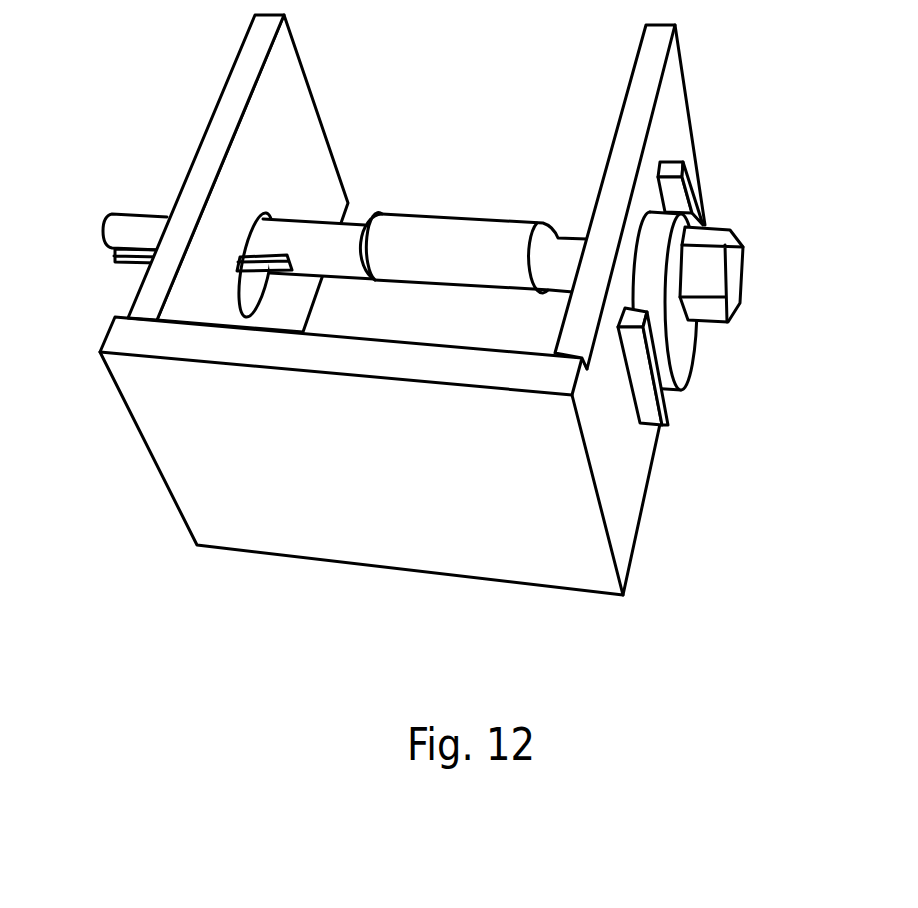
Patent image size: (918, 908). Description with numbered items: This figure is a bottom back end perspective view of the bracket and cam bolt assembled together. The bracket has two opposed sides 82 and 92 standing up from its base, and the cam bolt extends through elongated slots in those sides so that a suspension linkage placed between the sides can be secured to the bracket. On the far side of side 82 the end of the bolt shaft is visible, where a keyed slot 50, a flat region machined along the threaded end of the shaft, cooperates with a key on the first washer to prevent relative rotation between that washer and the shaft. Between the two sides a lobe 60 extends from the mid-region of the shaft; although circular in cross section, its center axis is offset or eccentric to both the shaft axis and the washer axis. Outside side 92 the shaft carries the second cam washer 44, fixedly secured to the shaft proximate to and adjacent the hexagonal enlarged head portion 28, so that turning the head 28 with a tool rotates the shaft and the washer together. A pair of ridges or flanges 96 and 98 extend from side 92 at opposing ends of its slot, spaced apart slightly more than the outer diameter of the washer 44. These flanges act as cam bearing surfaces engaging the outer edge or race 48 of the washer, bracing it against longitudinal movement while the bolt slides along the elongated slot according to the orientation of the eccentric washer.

The enlarged head portion 28 is at (733, 268).
The second cam washer 44 is at (685, 350).
The outer edge or race 48 is at (657, 230).
The keyed slot 50 is at (113, 251).
The lobe 60 is at (445, 243).
The side of bracket 82 is at (247, 62).
The side of bracket 92 is at (652, 67).
The ridge or flange 96 is at (648, 405).
The ridge or flange 98 is at (688, 190).